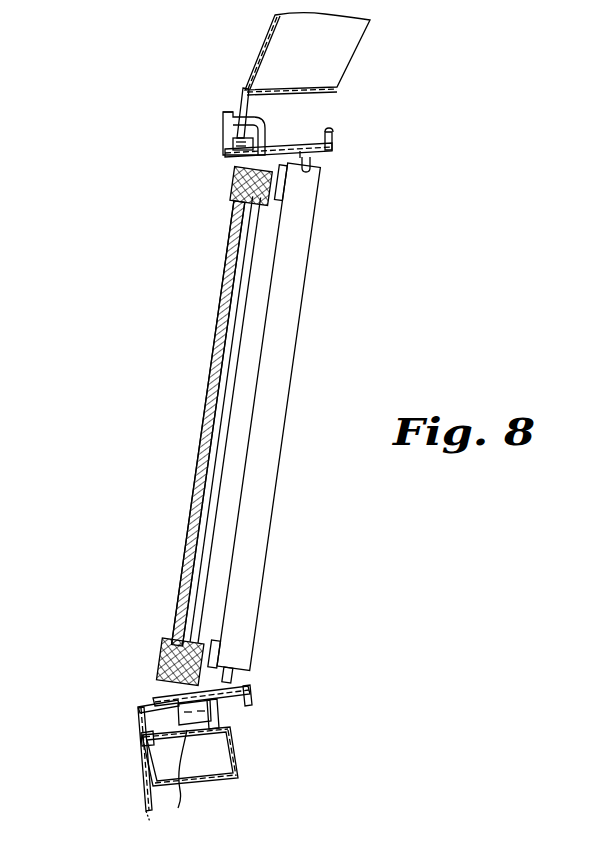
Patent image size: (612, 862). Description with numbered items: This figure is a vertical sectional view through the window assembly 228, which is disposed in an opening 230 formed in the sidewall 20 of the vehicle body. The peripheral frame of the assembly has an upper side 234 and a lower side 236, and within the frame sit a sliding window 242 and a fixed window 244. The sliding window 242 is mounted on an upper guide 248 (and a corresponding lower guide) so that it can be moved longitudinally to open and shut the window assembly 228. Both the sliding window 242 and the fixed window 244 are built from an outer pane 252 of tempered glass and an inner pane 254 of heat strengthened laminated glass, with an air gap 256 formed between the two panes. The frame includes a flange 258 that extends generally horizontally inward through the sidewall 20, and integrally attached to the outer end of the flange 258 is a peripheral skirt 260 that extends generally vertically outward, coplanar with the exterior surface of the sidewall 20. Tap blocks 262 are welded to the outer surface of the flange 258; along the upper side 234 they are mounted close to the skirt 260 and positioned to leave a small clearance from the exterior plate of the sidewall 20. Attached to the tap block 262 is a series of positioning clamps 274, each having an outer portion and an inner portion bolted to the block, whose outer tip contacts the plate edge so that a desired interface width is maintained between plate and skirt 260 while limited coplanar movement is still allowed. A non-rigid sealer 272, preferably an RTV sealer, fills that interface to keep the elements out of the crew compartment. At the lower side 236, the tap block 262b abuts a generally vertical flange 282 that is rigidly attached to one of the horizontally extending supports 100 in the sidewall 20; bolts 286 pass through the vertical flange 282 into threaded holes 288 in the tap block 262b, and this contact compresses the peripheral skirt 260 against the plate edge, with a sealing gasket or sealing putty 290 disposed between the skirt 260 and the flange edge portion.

The sidewall 20 is at (146, 806).
The horizontally extending support 100 is at (240, 752).
The window assembly 228 is at (318, 165).
The opening 230 is at (220, 668).
The upper side 234 is at (326, 138).
The lower side 236 is at (250, 690).
The sliding window 242 is at (292, 308).
The fixed window 244 is at (223, 290).
The upper guide 248 is at (306, 186).
The outer pane 252 is at (216, 355).
The inner pane 254 is at (212, 415).
The air gap 256 is at (210, 491).
The flange 258 is at (302, 144).
The peripheral skirt 260 is at (222, 147).
The tap block 262 is at (240, 110).
The tap block on lower side 262b is at (188, 732).
The sealer 272 is at (232, 107).
The clamp 274 is at (262, 128).
The vertical flange 282 is at (217, 785).
The bolt 286 is at (216, 720).
The threaded hole 288 is at (150, 743).
The sealing gasket 290 is at (145, 706).